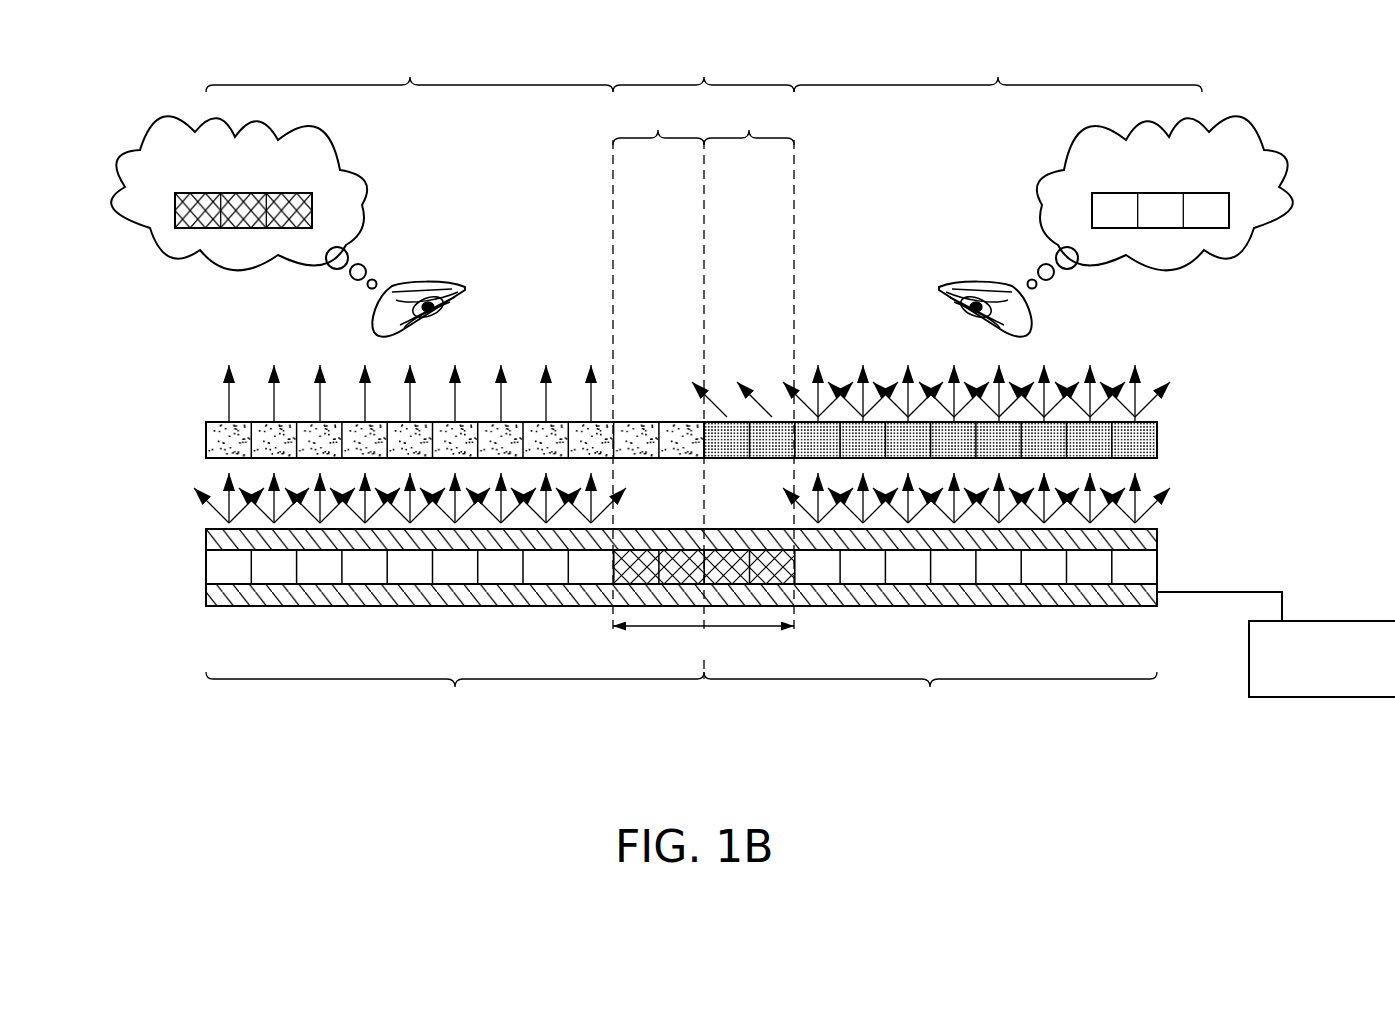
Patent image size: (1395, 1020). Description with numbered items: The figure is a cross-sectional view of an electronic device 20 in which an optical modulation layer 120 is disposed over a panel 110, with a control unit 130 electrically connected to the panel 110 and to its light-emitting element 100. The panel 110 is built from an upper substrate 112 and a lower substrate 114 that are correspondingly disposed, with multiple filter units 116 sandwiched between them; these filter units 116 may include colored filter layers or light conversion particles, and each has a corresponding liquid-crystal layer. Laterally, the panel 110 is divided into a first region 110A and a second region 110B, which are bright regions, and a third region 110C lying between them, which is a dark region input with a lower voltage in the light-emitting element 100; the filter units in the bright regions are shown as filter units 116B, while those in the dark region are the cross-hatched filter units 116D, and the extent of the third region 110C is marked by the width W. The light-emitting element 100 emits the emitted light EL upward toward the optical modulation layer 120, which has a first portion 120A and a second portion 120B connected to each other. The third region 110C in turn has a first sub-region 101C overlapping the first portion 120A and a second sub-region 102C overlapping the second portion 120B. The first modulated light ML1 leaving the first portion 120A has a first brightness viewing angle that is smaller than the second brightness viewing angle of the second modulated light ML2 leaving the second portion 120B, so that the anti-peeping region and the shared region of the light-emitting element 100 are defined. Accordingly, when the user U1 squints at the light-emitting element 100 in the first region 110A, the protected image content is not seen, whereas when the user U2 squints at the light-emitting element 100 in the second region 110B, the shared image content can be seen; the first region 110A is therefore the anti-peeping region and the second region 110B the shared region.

The electronic device 20 is at (73, 63).
The light-emitting element 100 is at (165, 556).
The panel 110 is at (165, 574).
The first region 110A is at (409, 67).
The second region 110B is at (998, 67).
The third region 110C is at (703, 67).
The first sub-region 101C is at (658, 386).
The second sub-region 102C is at (749, 363).
The upper substrate 112 is at (1135, 541).
The lower substrate 114 is at (1135, 596).
The filter units 116 is at (1308, 292).
The filter units in the bright region 116B is at (1135, 567).
The filter units in the dark region 116D is at (724, 567).
The optical modulation layer 120 is at (166, 443).
The first portion 120A is at (455, 699).
The second portion 120B is at (930, 699).
The control unit 130 is at (1352, 676).
The width of the third region W is at (703, 644).
The first modulated light ML1 is at (461, 393).
The second modulated light ML2 is at (1006, 391).
The emitted light EL is at (674, 493).
The user U1 is at (314, 226).
The user U2 is at (1116, 226).